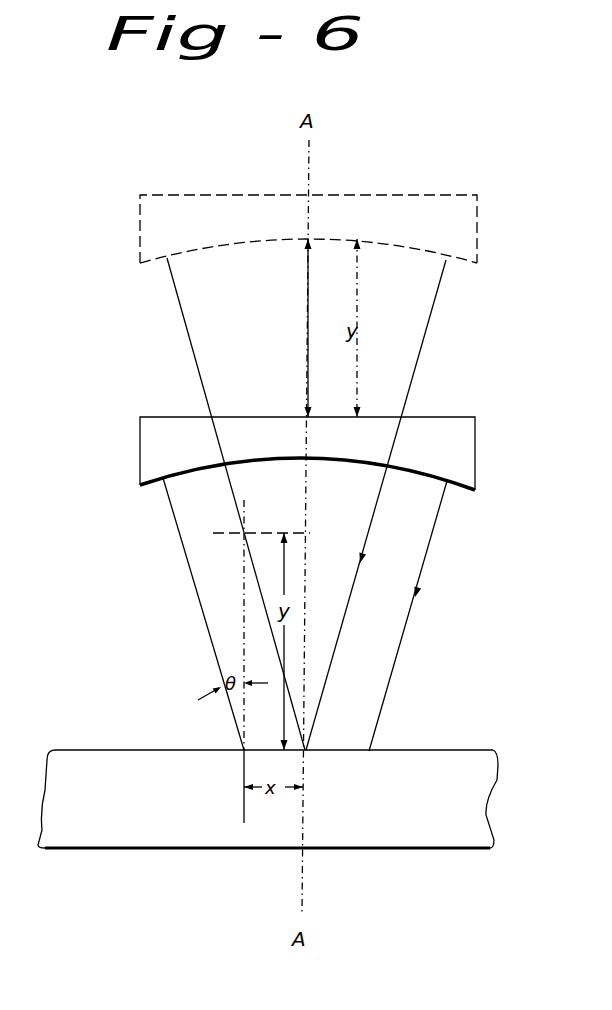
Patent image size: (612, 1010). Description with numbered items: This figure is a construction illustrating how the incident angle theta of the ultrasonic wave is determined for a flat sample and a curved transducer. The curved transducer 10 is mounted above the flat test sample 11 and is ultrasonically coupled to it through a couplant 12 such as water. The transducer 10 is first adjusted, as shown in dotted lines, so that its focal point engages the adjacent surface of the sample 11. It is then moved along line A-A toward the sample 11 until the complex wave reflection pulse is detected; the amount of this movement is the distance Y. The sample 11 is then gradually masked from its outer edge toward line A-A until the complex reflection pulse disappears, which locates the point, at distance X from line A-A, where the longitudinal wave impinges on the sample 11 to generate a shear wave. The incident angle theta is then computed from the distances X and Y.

The transducer 10 is at (392, 226).
The test sample 11 is at (436, 801).
The couplant 12 is at (490, 626).